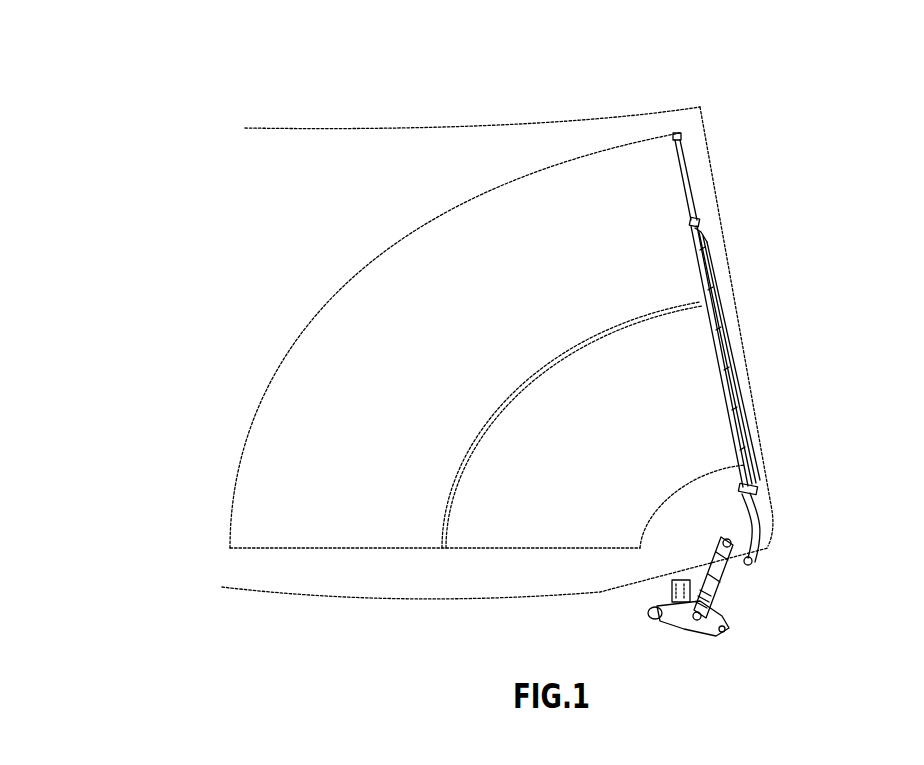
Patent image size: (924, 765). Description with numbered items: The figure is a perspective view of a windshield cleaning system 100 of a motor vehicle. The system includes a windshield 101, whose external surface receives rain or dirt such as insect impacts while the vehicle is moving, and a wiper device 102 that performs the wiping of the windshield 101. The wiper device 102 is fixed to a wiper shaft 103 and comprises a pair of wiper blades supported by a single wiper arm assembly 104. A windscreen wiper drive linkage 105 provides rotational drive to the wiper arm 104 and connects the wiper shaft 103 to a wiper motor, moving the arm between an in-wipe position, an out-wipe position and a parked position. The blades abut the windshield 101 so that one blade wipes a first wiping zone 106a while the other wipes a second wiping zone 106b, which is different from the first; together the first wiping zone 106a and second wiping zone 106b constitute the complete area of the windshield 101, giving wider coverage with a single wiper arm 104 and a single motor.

The windshield cleaning system 100 is at (776, 140).
The windshield 101 is at (412, 153).
The wiper device 102 is at (732, 397).
The wiper shaft 103 is at (723, 602).
The wiper arm assembly 104 is at (752, 447).
The windscreen wiper drive linkage 105 is at (718, 563).
The first wiping zone 106a is at (672, 363).
The second wiping zone 106b is at (363, 357).